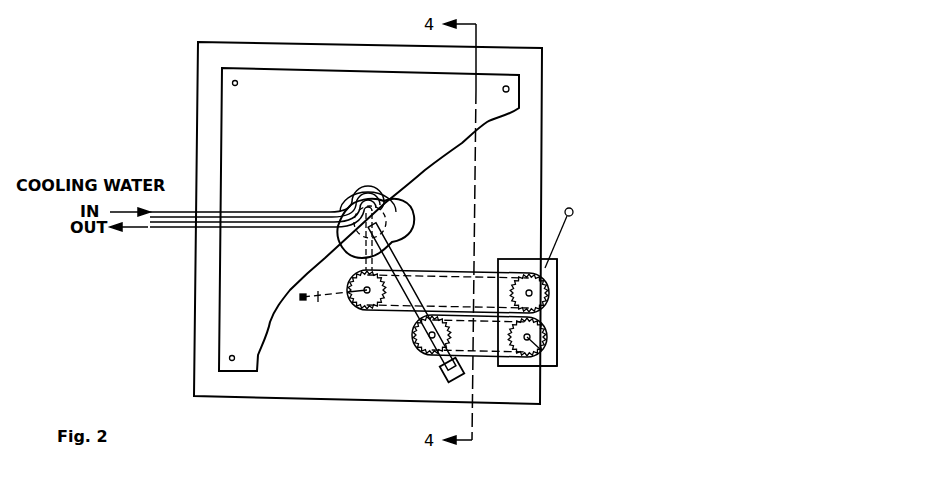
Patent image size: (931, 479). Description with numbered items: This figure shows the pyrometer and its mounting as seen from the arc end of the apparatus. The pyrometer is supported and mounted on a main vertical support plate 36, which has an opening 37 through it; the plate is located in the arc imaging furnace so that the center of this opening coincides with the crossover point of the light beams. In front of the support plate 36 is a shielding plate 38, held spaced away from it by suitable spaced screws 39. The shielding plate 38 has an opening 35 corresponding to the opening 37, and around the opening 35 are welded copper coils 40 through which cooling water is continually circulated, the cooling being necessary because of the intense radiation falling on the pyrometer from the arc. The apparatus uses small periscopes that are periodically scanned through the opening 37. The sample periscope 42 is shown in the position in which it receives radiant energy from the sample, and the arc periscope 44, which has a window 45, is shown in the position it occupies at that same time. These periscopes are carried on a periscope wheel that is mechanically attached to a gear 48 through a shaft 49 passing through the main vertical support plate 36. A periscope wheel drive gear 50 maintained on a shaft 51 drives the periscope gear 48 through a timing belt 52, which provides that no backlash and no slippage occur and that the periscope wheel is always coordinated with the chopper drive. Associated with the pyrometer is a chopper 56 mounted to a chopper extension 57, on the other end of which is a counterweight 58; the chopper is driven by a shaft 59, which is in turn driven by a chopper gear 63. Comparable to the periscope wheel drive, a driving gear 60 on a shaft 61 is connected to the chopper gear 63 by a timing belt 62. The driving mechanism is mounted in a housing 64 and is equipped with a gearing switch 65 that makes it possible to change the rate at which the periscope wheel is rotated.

The opening 35 is at (352, 194).
The main vertical support plate 36 is at (511, 169).
The opening 37 is at (381, 215).
The shielding plate 38 is at (369, 111).
The screws 39 is at (508, 89).
The copper coils 40 is at (302, 216).
The sample periscope 42 is at (398, 258).
The arc periscope 44 is at (318, 304).
The window 45 is at (301, 302).
The gear 48 is at (371, 304).
The shaft 49 is at (362, 298).
The periscope wheel drive gear 50 is at (532, 293).
The shaft 51 is at (553, 268).
The timing belt 52 is at (507, 274).
The chopper 56 is at (402, 229).
The chopper extension 57 is at (418, 314).
The counterweight 58 is at (447, 377).
The shaft 59 is at (428, 338).
The driving gear 60 is at (530, 337).
The shaft 61 is at (541, 351).
The timing belt 62 is at (519, 367).
The chopper gear 63 is at (433, 348).
The housing 64 is at (558, 312).
The gearing switch 65 is at (574, 212).